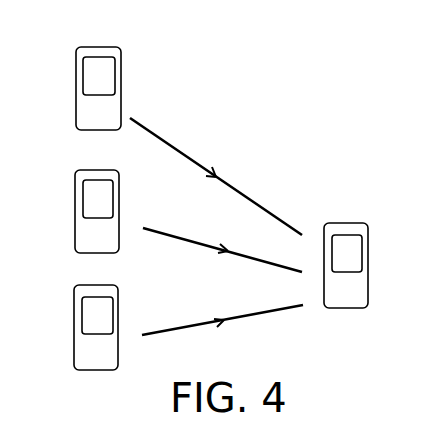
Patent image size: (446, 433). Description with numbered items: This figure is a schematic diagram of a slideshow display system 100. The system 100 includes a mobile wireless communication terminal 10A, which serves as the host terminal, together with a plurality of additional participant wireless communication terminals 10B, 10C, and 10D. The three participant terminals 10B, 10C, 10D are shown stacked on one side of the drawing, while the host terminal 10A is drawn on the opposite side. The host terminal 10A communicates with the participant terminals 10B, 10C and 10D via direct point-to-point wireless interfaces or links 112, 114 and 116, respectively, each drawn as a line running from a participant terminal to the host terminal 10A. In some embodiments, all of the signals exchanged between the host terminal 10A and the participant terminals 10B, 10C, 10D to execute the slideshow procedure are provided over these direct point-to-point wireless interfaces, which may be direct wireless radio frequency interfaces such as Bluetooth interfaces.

The slideshow display system 100 is at (316, 90).
The mobile wireless communication terminal 10A is at (328, 222).
The participant wireless communication terminal 10B is at (80, 46).
The participant wireless communication terminal 10C is at (80, 169).
The participant wireless communication terminal 10D is at (80, 284).
The wireless interface or link 112 is at (213, 165).
The wireless interface or link 114 is at (233, 245).
The wireless interface or link 116 is at (210, 317).